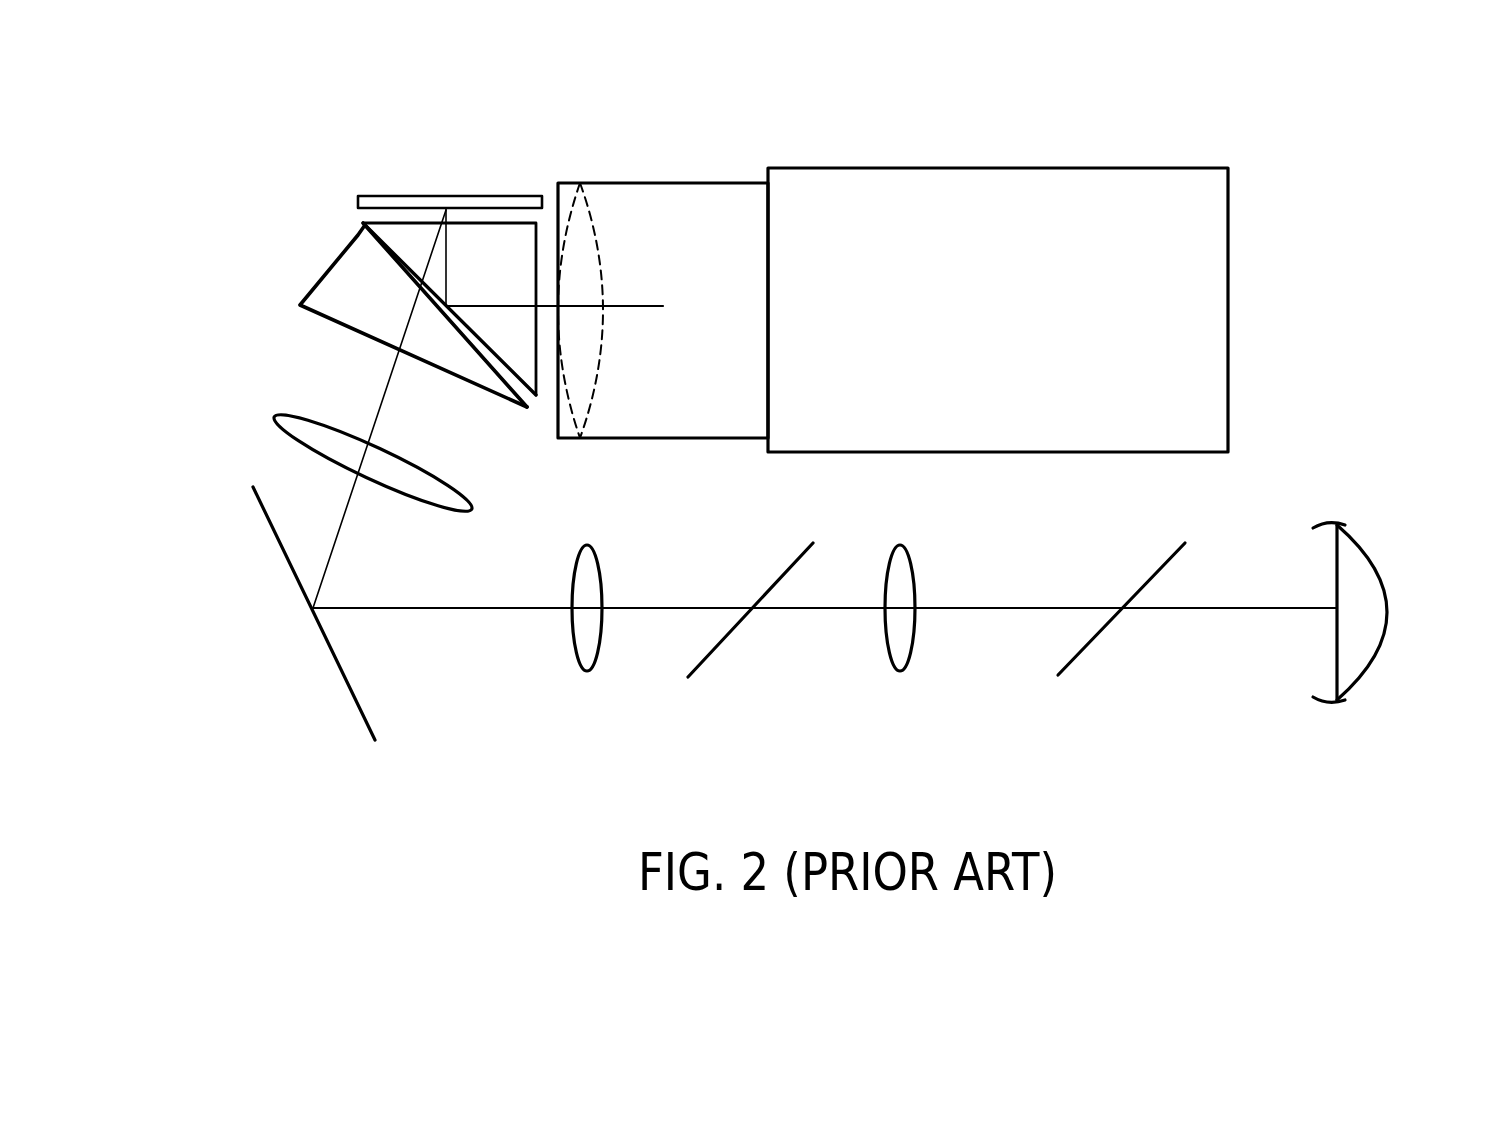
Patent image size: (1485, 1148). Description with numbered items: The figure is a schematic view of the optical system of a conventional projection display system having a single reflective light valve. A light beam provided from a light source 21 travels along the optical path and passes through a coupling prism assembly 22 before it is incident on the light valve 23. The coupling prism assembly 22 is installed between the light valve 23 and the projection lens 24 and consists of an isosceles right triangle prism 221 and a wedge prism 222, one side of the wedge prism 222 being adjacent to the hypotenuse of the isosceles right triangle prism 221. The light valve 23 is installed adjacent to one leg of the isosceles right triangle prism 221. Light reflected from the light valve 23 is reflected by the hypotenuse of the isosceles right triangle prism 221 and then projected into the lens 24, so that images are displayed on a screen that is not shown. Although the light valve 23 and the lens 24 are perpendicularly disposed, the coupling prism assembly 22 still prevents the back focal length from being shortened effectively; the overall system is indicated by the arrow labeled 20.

The optical pickup head (prior art) 20 is at (1127, 796).
The light source 21 is at (1377, 558).
The coupling prism assembly 22 is at (187, 187).
The isosceles right triangle prism 221 is at (395, 237).
The wedge prism 222 is at (343, 283).
The light valve 23 is at (415, 203).
The projection lens 24 is at (1197, 308).